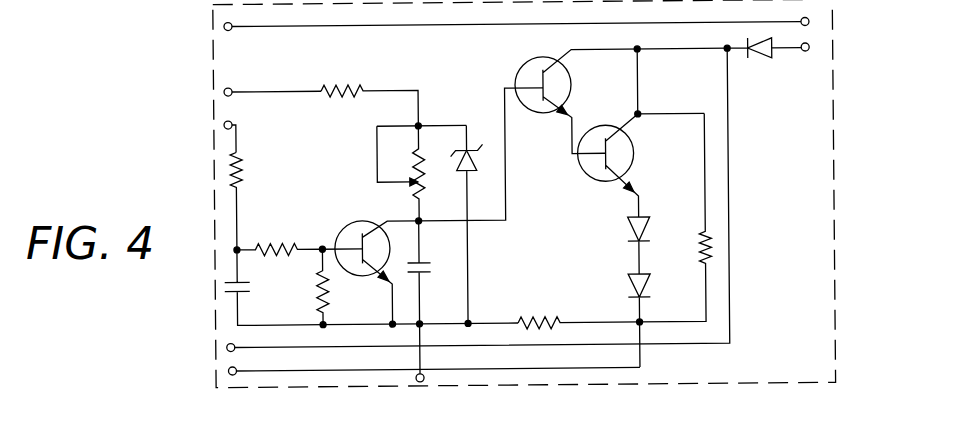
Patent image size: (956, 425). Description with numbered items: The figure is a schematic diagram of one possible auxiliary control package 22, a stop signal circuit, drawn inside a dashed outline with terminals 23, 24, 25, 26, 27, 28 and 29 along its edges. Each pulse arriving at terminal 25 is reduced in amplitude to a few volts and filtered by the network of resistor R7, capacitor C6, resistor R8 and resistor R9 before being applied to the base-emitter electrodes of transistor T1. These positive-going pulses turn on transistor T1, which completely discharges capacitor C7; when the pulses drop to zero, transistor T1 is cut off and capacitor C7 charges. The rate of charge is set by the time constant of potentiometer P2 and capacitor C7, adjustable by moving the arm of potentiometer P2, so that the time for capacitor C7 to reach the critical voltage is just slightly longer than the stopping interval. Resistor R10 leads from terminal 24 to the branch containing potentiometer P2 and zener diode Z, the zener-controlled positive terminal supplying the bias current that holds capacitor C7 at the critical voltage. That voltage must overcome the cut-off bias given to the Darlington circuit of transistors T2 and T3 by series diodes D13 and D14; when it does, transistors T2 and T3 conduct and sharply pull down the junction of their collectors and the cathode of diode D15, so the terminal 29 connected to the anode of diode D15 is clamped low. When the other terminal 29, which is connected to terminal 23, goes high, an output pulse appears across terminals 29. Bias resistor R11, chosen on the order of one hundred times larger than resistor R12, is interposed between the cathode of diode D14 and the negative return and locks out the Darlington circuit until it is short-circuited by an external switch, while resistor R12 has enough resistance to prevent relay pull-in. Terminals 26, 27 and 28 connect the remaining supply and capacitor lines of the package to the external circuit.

The auxiliary control package 22 is at (481, 66).
The terminal 23 is at (232, 27).
The terminal 24 is at (232, 87).
The terminal 25 is at (232, 120).
The terminal 26 is at (226, 345).
The terminal 27 is at (227, 369).
The terminal 28 is at (422, 379).
The terminals 29 is at (811, 25).
The resistor R7 is at (257, 200).
The resistor R8 is at (281, 234).
The resistor R9 is at (344, 288).
The resistor R10 is at (371, 88).
The bias resistor R11 is at (579, 308).
The resistor R12 is at (675, 217).
The potentiometer P2 is at (422, 174).
The zener Z is at (475, 225).
The transistor T1 is at (371, 260).
The transistor T2 is at (574, 124).
The transistor T3 is at (641, 132).
The capacitor C6 is at (273, 287).
The capacitor C7 is at (462, 297).
The diode D13 is at (609, 245).
The diode D14 is at (611, 315).
The diode D15 is at (764, 66).